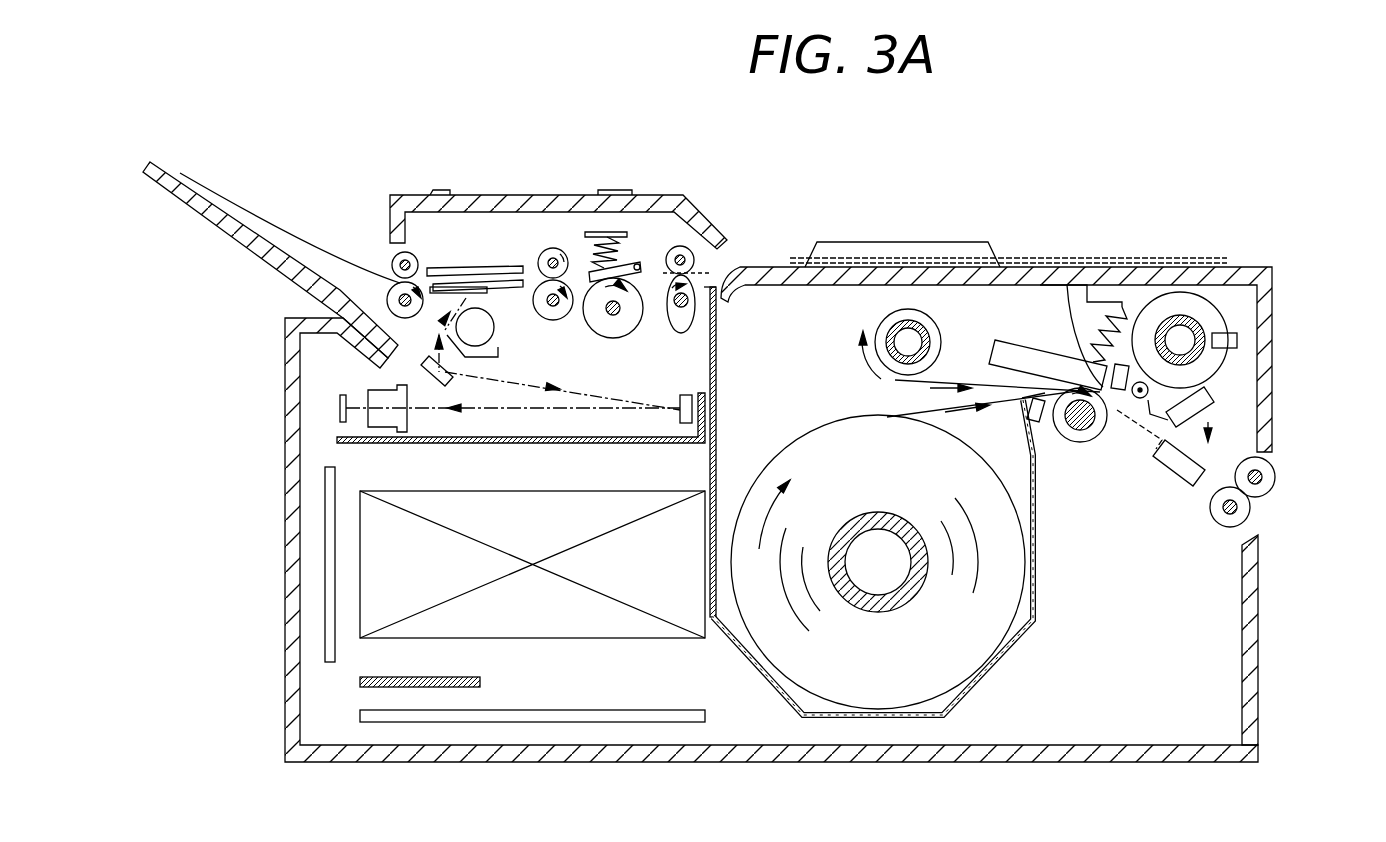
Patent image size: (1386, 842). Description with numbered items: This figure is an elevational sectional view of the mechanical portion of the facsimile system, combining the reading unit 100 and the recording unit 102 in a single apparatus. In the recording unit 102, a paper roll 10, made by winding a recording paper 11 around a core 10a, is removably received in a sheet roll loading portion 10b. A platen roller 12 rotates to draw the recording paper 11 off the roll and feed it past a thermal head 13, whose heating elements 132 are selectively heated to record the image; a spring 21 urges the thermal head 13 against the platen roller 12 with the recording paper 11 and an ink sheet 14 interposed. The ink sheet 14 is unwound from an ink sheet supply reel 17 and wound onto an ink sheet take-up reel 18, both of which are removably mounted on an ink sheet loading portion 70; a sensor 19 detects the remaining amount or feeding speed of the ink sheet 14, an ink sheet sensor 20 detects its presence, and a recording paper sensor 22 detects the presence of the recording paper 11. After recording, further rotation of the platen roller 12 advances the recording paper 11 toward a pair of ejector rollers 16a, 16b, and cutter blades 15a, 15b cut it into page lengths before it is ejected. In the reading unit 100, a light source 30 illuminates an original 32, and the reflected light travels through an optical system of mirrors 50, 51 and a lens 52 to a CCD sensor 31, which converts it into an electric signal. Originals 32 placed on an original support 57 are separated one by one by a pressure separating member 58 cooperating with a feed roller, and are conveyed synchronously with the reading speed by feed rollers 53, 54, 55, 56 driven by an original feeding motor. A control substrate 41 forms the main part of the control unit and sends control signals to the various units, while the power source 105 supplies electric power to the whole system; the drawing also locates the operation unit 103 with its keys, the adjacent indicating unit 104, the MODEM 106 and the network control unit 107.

The paper roll 10 is at (960, 652).
The core 10a is at (925, 590).
The sheet roll loading portion 10b is at (945, 706).
The recording paper 11 is at (888, 415).
The platen roller 12 is at (1093, 440).
The thermal head 13 is at (1025, 358).
The ink sheet 14 is at (953, 380).
The cutter blade 15a is at (1180, 487).
The cutter blade 15b is at (1215, 402).
The ejector roller 16a is at (1248, 513).
The ejector roller 16b is at (1276, 478).
The ink sheet supply reel 17 is at (1222, 333).
The ink sheet take-up reel 18 is at (907, 335).
The sensor 19 is at (1238, 340).
The ink sheet sensor 20 is at (1146, 306).
The spring 21 is at (1122, 372).
The recording paper sensor 22 is at (1040, 423).
The light source 30 is at (492, 333).
The CCD sensor 31 is at (338, 400).
The original 32 is at (218, 197).
The control substrate 41 is at (575, 723).
The mirror 50 is at (448, 378).
The mirror 51 is at (703, 393).
The lens 52 is at (407, 412).
The feed roller 53 is at (700, 270).
The feed roller 54 is at (622, 337).
The feed roller 55 is at (575, 283).
The feed roller 56 is at (425, 265).
The original support 57 is at (855, 262).
The pressure separating member 58 is at (632, 266).
The ink sheet loading portion 70 is at (985, 303).
The reading unit 100 is at (345, 243).
The recording unit 102 is at (1195, 640).
The operation unit 103 is at (576, 183).
The indicating unit 104 is at (458, 178).
The power source 105 is at (382, 560).
The MODEM 106 is at (365, 687).
The network control unit 107 is at (332, 637).
The heating elements 132 is at (1064, 297).